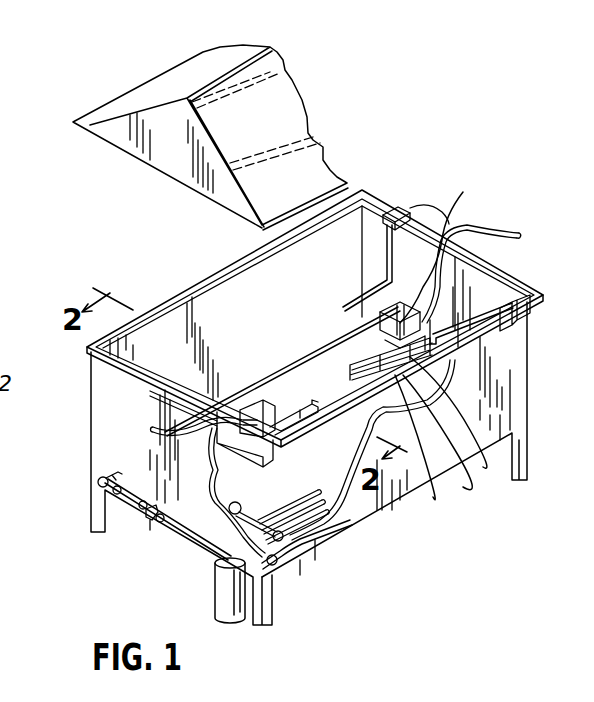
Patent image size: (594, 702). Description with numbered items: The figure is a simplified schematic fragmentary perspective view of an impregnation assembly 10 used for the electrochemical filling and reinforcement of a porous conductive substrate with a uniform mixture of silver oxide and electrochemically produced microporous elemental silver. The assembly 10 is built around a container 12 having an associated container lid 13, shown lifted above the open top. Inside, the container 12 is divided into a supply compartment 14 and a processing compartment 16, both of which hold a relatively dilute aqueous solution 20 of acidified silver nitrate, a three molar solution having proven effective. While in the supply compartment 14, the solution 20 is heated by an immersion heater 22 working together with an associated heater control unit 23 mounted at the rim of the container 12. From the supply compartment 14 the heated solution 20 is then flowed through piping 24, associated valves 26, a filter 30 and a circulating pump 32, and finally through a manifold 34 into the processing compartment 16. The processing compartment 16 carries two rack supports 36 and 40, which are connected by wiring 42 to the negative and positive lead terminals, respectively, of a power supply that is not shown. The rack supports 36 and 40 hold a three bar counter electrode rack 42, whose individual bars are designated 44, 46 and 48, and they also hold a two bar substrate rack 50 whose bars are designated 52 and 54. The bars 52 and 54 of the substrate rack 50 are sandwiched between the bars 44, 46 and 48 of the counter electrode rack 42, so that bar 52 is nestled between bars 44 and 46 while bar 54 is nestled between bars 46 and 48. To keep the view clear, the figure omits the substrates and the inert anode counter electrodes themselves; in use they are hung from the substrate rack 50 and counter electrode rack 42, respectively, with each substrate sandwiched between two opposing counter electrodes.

The impregnation assembly 10 is at (526, 184).
The container 12 is at (518, 353).
The container lid 13 is at (163, 88).
The supply compartment 14 is at (167, 338).
The processing compartment 16 is at (347, 487).
The aqueous solution 20 is at (254, 357).
The immersion heater 22 is at (397, 210).
The heater control unit 23 is at (510, 300).
The piping 24 is at (197, 548).
The valves 26 is at (122, 500).
The filter 30 is at (153, 530).
The circulating pump 32 is at (232, 618).
The manifold 34 is at (320, 527).
The rack support 36 is at (445, 250).
The rack support 40 is at (163, 395).
The wiring; counter electrode rack 42 is at (473, 230).
The bar of counter electrode rack 44 is at (347, 330).
The bar of counter electrode rack 46 is at (457, 473).
The bar of counter electrode rack 48 is at (473, 457).
The substrate rack 50 is at (362, 368).
The bar of substrate rack 52 is at (356, 336).
The bar of substrate rack 54 is at (427, 467).